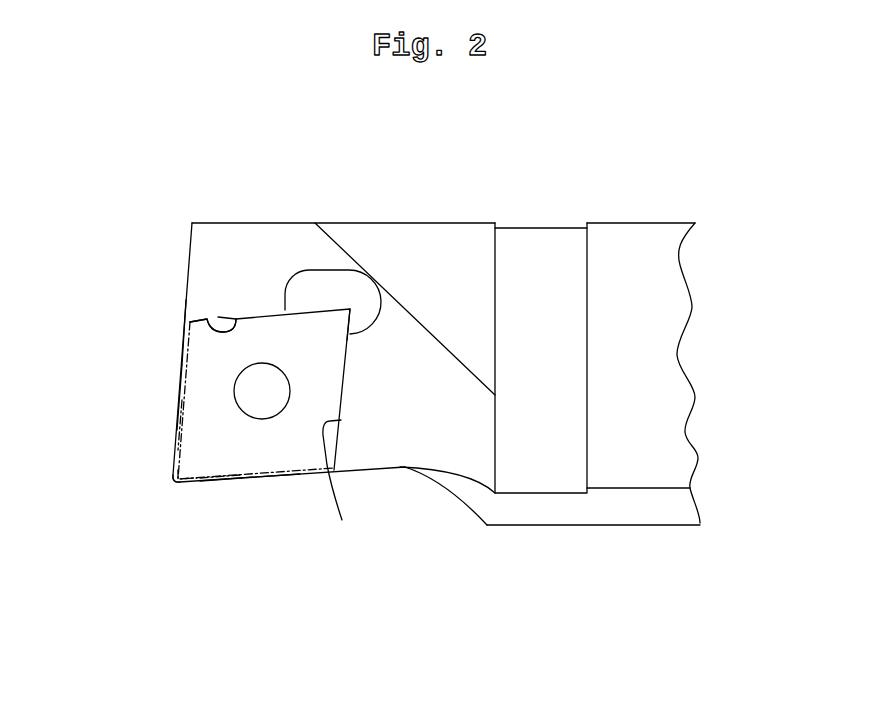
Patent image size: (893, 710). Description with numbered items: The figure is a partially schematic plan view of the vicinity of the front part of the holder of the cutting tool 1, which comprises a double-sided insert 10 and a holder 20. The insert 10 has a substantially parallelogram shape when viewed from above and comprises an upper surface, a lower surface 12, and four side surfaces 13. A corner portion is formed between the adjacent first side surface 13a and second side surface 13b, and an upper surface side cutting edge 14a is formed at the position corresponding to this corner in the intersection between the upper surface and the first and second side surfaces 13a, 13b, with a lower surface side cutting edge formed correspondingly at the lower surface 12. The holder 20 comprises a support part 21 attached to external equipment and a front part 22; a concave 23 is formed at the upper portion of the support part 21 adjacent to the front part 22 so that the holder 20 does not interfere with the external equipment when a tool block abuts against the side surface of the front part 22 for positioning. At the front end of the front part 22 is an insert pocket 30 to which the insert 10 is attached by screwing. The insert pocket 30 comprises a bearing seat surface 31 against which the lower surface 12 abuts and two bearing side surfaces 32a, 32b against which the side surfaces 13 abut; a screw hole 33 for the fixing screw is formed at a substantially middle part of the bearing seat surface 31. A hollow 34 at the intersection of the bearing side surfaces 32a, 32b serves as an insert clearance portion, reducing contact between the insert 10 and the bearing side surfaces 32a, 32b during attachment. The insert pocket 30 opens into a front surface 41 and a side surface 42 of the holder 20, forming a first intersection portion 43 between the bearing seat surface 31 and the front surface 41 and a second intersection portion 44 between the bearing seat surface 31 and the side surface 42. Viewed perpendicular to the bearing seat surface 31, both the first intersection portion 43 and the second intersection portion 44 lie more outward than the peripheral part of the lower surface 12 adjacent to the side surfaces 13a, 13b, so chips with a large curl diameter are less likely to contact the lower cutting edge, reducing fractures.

The cutting tool 1 is at (393, 632).
The insert 10 is at (322, 388).
The lower surface 12 is at (197, 462).
The side surface 13 is at (218, 317).
The first side surface 13a is at (178, 432).
The second side surface 13b is at (217, 483).
The upper surface side cutting edge 14a is at (173, 487).
The holder 20 is at (437, 590).
The support part 21 is at (613, 430).
The front part 22 is at (453, 432).
The concave 23 is at (495, 213).
The insert pocket 30 is at (268, 312).
The bearing seat surface 31 is at (299, 335).
The bearing side surface 32a is at (205, 318).
The bearing side surface 32b is at (342, 520).
The screw hole 33 is at (258, 385).
The hollow 34 is at (340, 287).
The front surface 41 is at (182, 365).
The side surface 42 is at (278, 481).
The first intersection portion 43 is at (177, 395).
The second intersection portion 44 is at (241, 483).